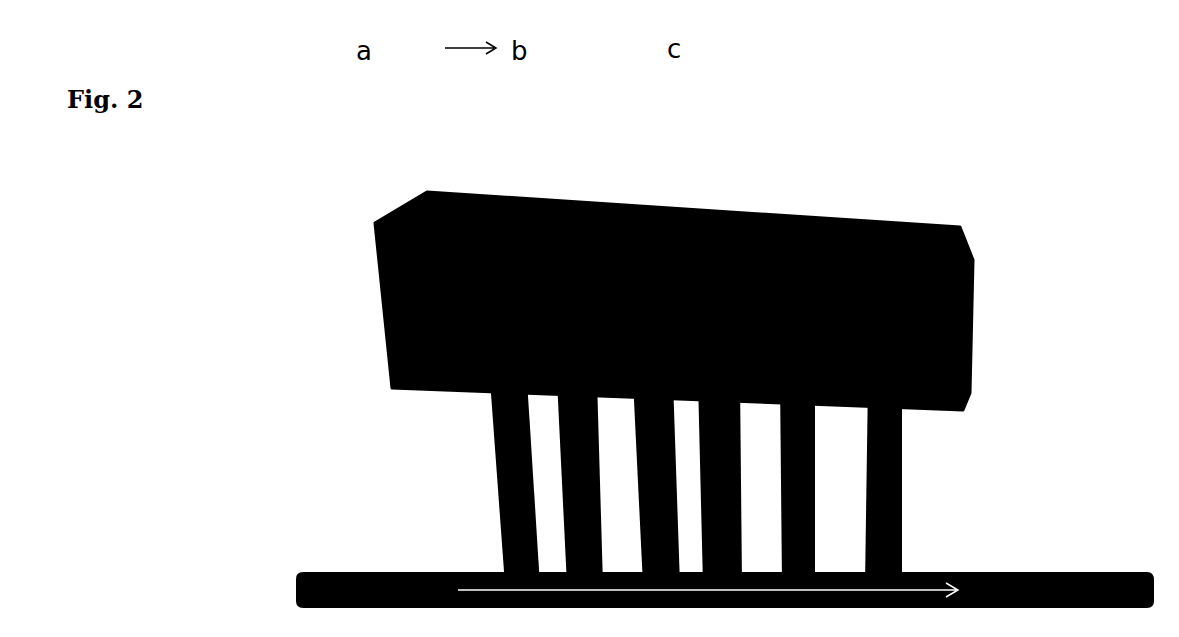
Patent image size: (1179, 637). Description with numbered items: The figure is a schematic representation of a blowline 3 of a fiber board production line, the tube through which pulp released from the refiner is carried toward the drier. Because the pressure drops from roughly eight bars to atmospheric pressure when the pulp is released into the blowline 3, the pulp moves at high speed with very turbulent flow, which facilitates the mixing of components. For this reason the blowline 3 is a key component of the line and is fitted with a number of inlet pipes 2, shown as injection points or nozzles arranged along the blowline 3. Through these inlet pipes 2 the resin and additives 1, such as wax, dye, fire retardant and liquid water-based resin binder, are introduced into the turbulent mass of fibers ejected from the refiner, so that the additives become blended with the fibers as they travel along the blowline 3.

The resin and additives 1 is at (674, 301).
The inlet pipes to the blowline 2 is at (696, 482).
The blowline 3 is at (725, 590).